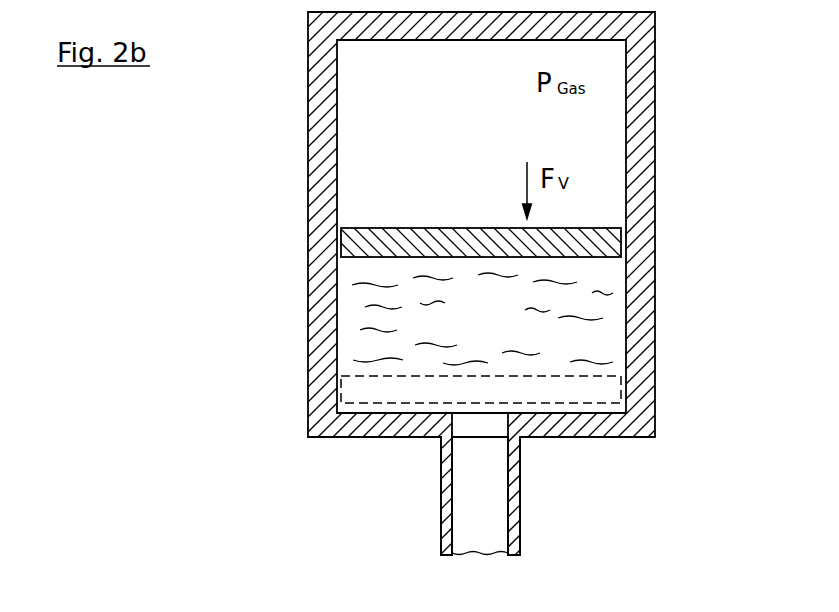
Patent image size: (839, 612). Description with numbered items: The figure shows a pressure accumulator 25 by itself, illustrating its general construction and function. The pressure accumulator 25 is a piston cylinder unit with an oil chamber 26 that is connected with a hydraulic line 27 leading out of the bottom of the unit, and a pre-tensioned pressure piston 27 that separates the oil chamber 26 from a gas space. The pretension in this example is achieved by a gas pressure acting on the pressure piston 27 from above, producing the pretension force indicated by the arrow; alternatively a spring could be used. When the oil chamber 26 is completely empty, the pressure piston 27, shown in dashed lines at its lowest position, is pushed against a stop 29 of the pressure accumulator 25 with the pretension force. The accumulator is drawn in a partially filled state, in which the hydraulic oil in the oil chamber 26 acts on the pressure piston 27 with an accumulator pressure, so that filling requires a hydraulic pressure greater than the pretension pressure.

The pressure accumulator 25 is at (656, 58).
The oil chamber 26 is at (506, 321).
The pressure piston 27 is at (621, 242).
The stop 29 is at (592, 415).